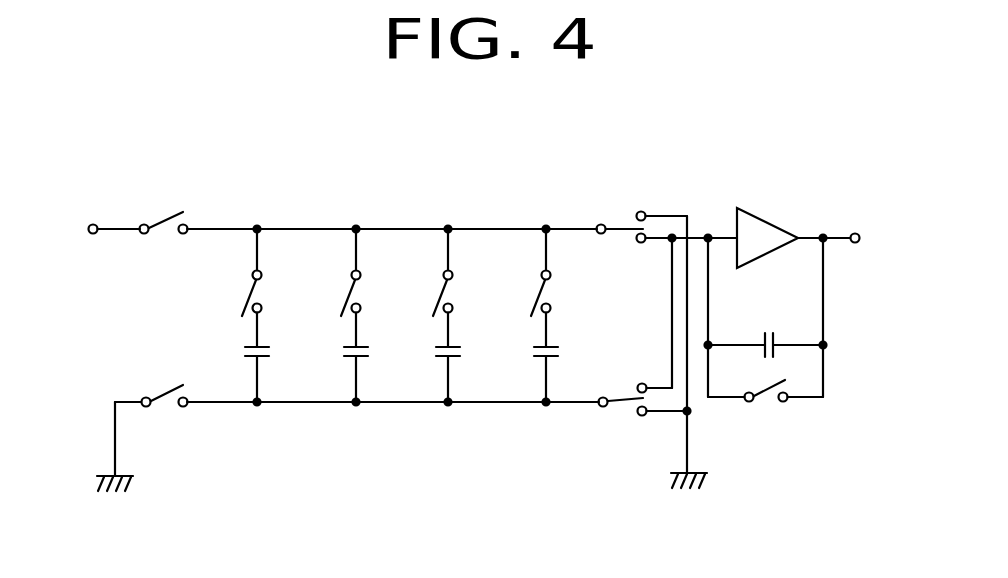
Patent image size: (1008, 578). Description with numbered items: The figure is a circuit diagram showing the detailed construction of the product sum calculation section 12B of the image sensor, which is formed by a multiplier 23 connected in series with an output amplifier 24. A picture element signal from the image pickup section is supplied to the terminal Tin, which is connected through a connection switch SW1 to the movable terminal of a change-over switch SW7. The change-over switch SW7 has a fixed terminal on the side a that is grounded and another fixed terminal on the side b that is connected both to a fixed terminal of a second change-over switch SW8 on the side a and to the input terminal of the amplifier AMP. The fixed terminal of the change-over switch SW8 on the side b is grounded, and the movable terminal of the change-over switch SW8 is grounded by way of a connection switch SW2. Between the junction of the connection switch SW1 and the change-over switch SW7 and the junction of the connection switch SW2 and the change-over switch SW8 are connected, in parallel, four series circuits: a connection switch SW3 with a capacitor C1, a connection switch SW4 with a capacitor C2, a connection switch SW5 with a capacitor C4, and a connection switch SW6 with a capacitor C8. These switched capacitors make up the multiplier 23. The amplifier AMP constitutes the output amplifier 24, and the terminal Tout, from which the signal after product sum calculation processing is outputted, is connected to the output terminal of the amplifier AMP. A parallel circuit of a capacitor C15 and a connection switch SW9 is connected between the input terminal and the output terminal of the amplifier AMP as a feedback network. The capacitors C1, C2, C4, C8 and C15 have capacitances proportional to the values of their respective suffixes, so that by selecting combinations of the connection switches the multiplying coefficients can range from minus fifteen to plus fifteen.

The product sum calculation section 12B is at (510, 563).
The multiplier 23 is at (370, 426).
The output amplifier 24 is at (766, 460).
The connection switch SW1 is at (172, 218).
The connection switch SW2 is at (167, 387).
The connection switch SW3 is at (247, 295).
The connection switch SW4 is at (346, 295).
The connection switch SW5 is at (438, 295).
The connection switch SW6 is at (536, 295).
The change-over switch SW7 is at (620, 222).
The change-over switch SW8 is at (628, 395).
The connection switch SW9 is at (767, 402).
The capacitor C1 is at (244, 348).
The capacitor C2 is at (343, 348).
The capacitor C4 is at (435, 348).
The capacitor C8 is at (533, 348).
The capacitor C15 is at (772, 328).
The amplifier AMP is at (763, 218).
The terminal Tin is at (93, 234).
The terminal Tout is at (855, 243).
The side a is at (653, 283).
The side b is at (653, 346).